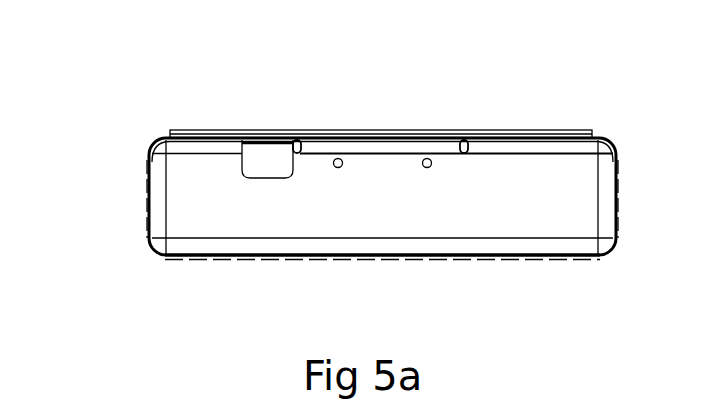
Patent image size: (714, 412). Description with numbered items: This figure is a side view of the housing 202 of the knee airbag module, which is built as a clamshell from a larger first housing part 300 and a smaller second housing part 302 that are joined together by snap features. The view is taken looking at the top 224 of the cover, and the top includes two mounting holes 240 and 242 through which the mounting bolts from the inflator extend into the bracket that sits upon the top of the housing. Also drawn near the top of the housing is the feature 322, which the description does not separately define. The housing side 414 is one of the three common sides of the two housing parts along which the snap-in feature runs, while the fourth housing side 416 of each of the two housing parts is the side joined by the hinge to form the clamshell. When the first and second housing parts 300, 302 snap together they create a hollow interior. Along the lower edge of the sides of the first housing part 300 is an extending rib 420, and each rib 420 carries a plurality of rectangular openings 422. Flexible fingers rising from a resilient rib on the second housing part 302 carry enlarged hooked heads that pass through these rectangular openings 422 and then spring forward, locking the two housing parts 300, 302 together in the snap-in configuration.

The first housing part 300 is at (187, 198).
The housing 202 is at (237, 198).
The top of the cover 224 is at (537, 203).
The connector 322 is at (265, 155).
The mounting hole 240 is at (334, 158).
The mounting hole 242 is at (428, 158).
The fourth housing side 416 is at (550, 148).
The housing side 414 is at (162, 230).
The second housing part 302 is at (243, 247).
The extending rib 420 is at (445, 260).
The rectangular openings 422 is at (298, 262).